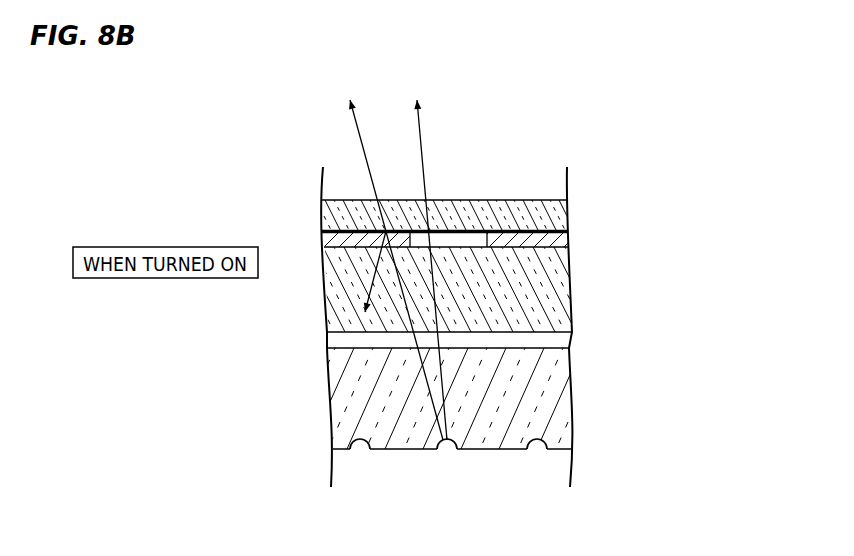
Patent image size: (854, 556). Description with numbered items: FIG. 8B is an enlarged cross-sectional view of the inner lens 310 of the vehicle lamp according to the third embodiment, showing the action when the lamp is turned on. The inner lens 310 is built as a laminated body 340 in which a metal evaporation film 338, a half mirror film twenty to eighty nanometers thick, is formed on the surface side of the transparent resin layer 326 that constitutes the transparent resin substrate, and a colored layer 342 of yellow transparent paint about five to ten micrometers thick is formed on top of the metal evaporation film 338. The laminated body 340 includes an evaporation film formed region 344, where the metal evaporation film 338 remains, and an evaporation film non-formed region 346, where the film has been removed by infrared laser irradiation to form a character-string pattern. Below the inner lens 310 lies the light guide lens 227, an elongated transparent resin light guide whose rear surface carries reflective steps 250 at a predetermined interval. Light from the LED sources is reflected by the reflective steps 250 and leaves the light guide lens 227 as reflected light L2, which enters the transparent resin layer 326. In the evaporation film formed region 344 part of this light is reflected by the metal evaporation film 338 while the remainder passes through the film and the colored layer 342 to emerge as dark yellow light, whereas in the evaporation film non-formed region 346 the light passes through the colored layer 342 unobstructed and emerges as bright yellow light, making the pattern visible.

The inner lens 310 is at (553, 143).
The colored layer 342 is at (567, 203).
The evaporation film formed region 344 is at (343, 227).
The evaporation film non-formed region 346 is at (467, 226).
The laminated body 340 is at (703, 233).
The metal evaporation film 338 is at (570, 238).
The transparent resin layer 326 is at (571, 290).
The light guide lens 227 is at (568, 396).
The reflective steps 250 is at (537, 448).
The reflected light L2 is at (379, 265).